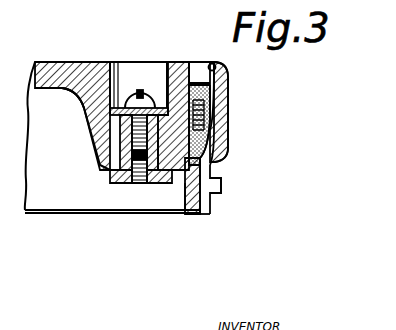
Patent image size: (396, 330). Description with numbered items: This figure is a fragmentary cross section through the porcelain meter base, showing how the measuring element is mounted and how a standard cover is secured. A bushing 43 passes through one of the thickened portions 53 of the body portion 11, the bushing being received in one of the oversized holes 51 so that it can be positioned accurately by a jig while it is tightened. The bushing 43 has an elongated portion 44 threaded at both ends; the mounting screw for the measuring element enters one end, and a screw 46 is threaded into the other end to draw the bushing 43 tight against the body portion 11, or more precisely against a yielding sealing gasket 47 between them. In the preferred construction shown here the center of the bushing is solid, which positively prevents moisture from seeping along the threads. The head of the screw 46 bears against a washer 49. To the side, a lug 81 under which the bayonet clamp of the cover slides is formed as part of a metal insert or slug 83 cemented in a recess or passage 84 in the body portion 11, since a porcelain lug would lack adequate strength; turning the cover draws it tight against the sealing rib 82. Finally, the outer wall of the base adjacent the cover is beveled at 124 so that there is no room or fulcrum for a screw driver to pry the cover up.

The body portion 11 is at (229, 108).
The bushing 43 is at (111, 184).
The elongated portion 44 is at (133, 148).
The screw 46 is at (143, 92).
The yielding sealing gasket 47 is at (108, 173).
The washer 49 is at (164, 106).
The oversized holes 51 is at (120, 135).
The thickened portions 53 is at (67, 93).
The lug 81 is at (223, 193).
The sealing rib 82 is at (197, 216).
The metal insert 83 is at (209, 169).
The recess 84 is at (213, 62).
The bevel 124 is at (214, 160).